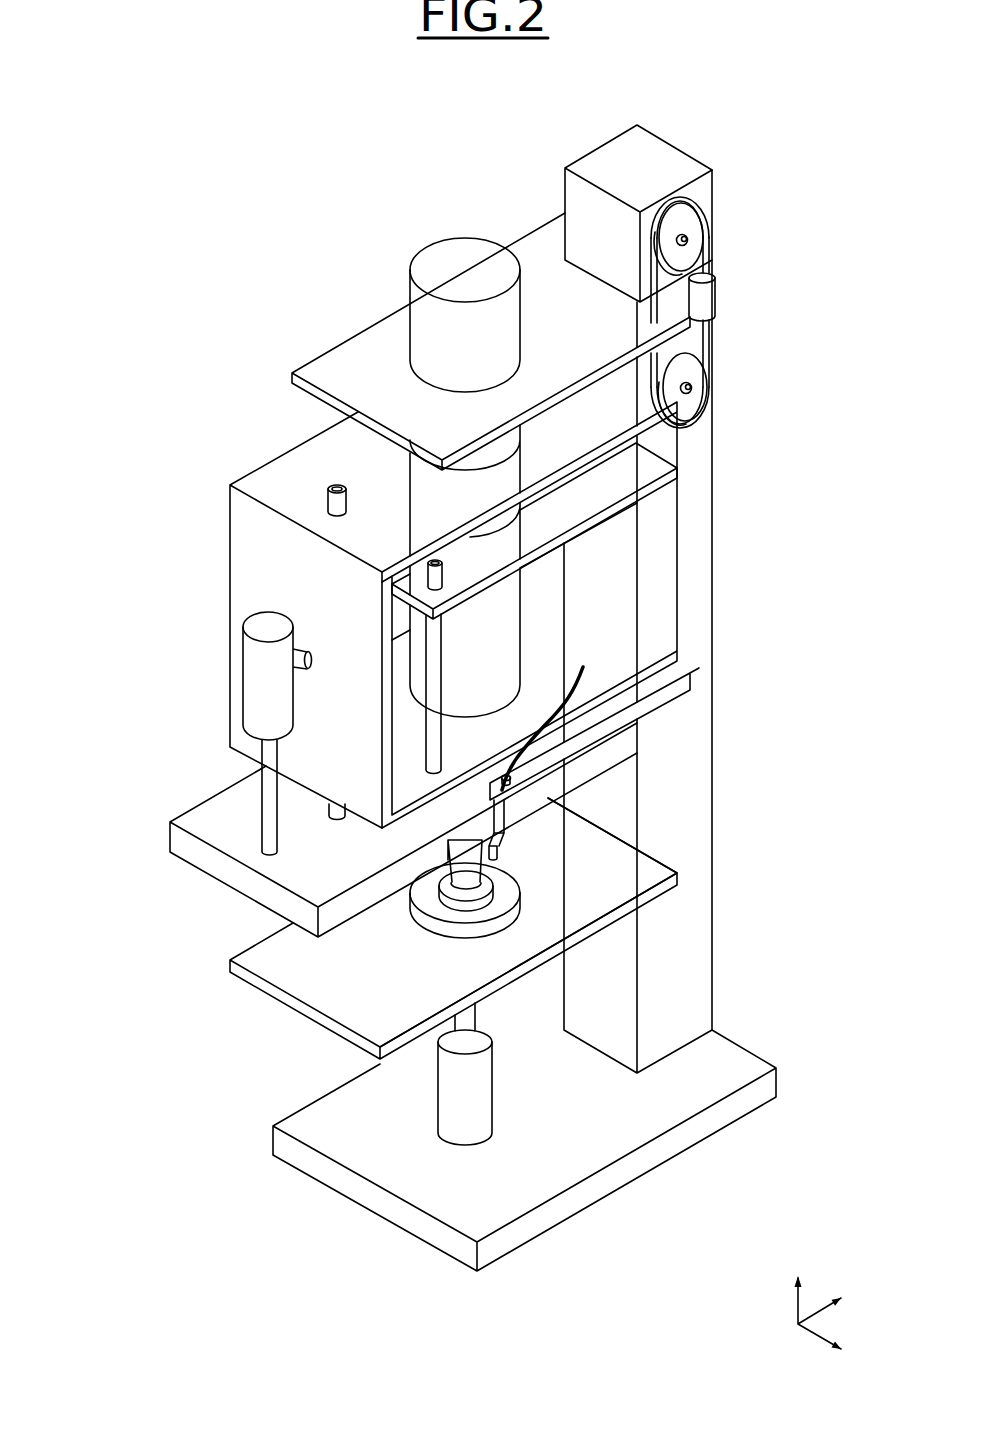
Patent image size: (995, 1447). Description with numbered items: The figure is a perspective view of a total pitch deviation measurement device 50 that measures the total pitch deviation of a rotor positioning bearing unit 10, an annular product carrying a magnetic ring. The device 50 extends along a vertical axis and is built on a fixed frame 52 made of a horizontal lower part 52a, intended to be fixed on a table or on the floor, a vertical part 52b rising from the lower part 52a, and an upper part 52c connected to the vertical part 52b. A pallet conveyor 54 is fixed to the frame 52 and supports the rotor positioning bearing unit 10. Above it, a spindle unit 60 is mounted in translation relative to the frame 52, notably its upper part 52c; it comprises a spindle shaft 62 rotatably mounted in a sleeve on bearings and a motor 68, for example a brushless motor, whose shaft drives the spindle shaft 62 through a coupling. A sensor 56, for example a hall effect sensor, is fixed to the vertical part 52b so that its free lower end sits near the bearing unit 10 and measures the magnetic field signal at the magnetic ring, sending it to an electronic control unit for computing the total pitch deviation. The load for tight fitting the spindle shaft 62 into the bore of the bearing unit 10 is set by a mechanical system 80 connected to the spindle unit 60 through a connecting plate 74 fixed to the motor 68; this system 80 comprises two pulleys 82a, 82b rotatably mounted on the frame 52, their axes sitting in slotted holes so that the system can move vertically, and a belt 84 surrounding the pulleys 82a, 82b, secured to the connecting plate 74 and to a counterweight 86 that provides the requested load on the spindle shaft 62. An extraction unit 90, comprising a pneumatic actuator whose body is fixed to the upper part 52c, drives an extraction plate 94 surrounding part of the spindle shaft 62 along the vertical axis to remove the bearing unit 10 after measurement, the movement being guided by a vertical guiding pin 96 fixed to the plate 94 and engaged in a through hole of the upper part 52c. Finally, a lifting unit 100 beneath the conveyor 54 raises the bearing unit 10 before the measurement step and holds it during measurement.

The rotor positioning bearing unit 10 is at (567, 878).
The total pitch deviation measurement device 50 is at (222, 218).
The fixed frame 52 is at (733, 960).
The horizontal lower part 52a is at (572, 1150).
The vertical part 52b is at (703, 718).
The upper part 52c is at (248, 568).
The pallet conveyor 54 is at (302, 982).
The sensor 56 is at (510, 815).
The spindle unit 60 is at (340, 288).
The spindle shaft 62 is at (485, 632).
The motor 68 is at (445, 268).
The connecting plate 74 is at (352, 360).
The mechanical system 80 is at (727, 262).
The pulley 82a is at (690, 397).
The pulley 82b is at (690, 221).
The belt 84 is at (700, 345).
The counterweight 86 is at (706, 297).
The extraction unit 90 is at (120, 648).
The extraction plate 94 is at (242, 880).
The vertical guiding pin 96 is at (330, 497).
The lifting unit 100 is at (465, 1091).